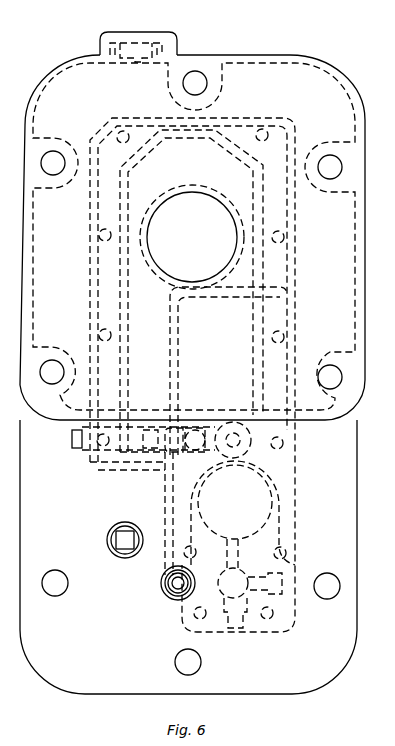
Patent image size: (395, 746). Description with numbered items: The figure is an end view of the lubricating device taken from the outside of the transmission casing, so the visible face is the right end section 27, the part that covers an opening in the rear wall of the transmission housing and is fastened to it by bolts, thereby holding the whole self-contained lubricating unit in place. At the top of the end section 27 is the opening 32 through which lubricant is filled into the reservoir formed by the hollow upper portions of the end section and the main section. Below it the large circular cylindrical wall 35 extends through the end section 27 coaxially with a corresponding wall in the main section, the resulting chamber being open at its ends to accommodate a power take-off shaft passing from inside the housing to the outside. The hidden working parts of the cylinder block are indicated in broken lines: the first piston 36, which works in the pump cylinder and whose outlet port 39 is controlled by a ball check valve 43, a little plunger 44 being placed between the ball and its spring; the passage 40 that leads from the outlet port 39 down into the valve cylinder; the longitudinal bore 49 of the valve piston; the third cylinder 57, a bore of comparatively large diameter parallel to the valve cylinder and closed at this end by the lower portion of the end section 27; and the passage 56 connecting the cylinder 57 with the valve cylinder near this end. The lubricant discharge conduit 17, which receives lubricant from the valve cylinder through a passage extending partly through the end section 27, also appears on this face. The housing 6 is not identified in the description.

The housing 6 is at (207, 520).
The right end section 27 is at (337, 78).
The opening 32 is at (108, 47).
The cylindrical wall 35 is at (183, 186).
The first piston 36 is at (235, 458).
The outlet port 39 is at (232, 422).
The passage 40 is at (173, 492).
The ball check valve 43 is at (198, 430).
The plunger 44 is at (160, 427).
The longitudinal bore 49 is at (230, 577).
The passage 56 is at (237, 548).
The third cylinder 57 is at (267, 500).
The lubricant discharge conduit 17 is at (163, 592).